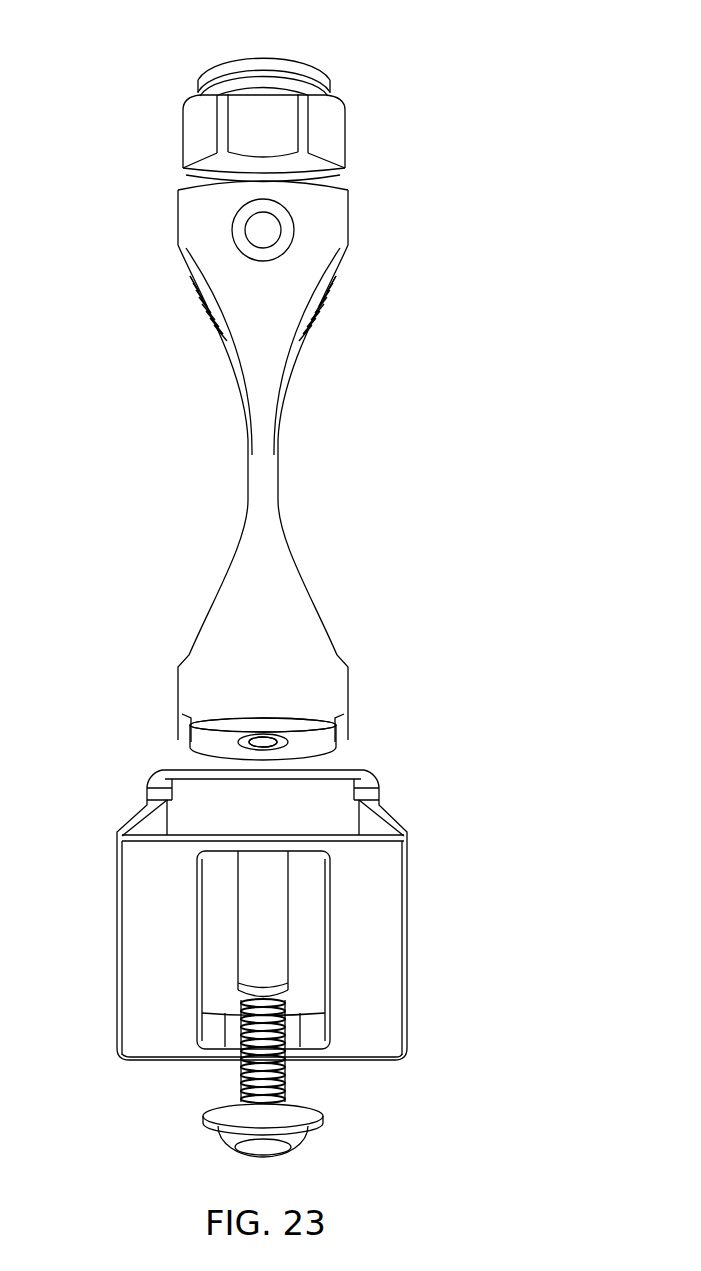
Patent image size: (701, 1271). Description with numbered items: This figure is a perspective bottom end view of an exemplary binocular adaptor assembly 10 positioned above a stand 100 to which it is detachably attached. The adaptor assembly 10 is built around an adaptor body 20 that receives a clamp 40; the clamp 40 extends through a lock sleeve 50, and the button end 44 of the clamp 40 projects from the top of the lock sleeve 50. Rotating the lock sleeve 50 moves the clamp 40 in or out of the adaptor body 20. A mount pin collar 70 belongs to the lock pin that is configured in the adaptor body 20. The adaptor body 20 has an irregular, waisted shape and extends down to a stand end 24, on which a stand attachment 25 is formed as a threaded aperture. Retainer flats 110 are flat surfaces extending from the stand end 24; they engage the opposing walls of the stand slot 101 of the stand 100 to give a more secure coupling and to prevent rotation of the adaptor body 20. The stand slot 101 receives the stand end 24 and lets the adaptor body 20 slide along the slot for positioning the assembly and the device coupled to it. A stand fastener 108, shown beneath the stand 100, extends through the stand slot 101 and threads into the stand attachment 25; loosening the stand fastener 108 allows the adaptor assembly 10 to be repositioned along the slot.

The binocular adaptor assembly 10 is at (157, 77).
The button end 44 is at (318, 72).
The clamp 40 is at (208, 136).
The lock sleeve 50 is at (293, 137).
The adaptor body 20 is at (252, 406).
The mount pin collar 70 is at (330, 305).
The retainer flat 110 is at (190, 733).
The stand attachment 25 is at (282, 749).
The stand end 24 is at (220, 735).
The stand 100 is at (388, 832).
The stand slot 101 is at (257, 880).
The stand fastener 108 is at (238, 1080).